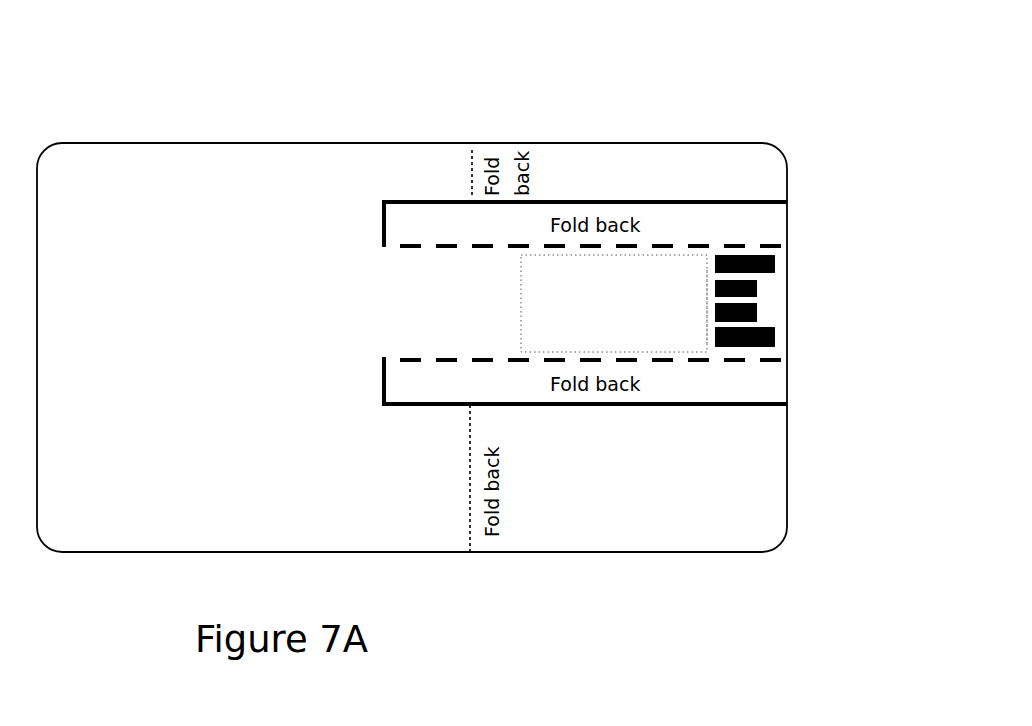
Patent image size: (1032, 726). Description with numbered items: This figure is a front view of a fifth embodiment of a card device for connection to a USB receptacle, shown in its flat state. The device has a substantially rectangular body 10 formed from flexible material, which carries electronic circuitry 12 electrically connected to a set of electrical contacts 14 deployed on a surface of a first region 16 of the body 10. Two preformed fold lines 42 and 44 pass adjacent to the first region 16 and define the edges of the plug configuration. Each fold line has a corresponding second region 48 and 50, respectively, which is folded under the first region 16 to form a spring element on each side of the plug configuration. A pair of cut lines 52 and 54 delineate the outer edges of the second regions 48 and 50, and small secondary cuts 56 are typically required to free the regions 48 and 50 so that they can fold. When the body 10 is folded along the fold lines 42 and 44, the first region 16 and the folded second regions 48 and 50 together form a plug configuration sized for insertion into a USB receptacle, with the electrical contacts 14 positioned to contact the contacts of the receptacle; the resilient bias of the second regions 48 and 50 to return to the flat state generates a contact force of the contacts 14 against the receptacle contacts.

The body 10 is at (175, 143).
The electronic circuitry 12 is at (695, 290).
The electrical contacts 14 is at (750, 247).
The first region 16 is at (760, 250).
The fold line 42 is at (663, 246).
The fold line 44 is at (730, 362).
The second region 48 is at (393, 207).
The second region 50 is at (410, 384).
The cut line 52 is at (565, 203).
The cut line 54 is at (702, 407).
The secondary cuts 56 is at (383, 224).